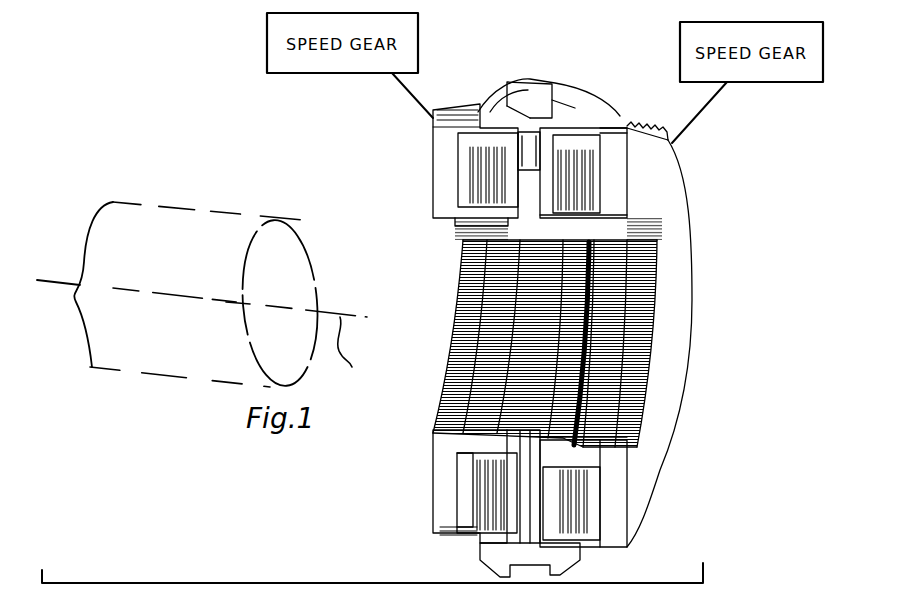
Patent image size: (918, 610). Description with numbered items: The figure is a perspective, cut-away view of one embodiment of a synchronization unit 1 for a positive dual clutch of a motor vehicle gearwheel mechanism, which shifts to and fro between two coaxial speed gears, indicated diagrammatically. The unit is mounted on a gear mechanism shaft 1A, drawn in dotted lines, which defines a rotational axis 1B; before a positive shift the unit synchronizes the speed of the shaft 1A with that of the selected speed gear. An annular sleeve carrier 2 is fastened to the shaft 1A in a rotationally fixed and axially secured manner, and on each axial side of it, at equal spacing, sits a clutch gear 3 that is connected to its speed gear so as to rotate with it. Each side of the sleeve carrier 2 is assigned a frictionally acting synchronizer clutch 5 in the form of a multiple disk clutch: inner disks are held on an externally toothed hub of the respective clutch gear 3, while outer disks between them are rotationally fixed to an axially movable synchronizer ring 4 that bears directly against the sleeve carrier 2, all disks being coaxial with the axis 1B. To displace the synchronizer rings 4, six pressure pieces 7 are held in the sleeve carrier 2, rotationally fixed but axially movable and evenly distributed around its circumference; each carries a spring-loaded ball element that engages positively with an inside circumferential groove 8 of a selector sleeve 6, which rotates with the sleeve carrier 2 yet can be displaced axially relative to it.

The synchronization unit 1 is at (378, 261).
The gear mechanism shaft 1A is at (206, 200).
The rotational axis 1B is at (357, 364).
The sleeve carrier 2 is at (463, 262).
The clutch gear 3 is at (443, 200).
The synchronizer ring 4 is at (500, 246).
The synchronizer clutch 5 is at (470, 167).
The selector sleeve 6 is at (580, 97).
The pressure piece 7 is at (530, 143).
The inside circumferential groove 8 is at (531, 145).